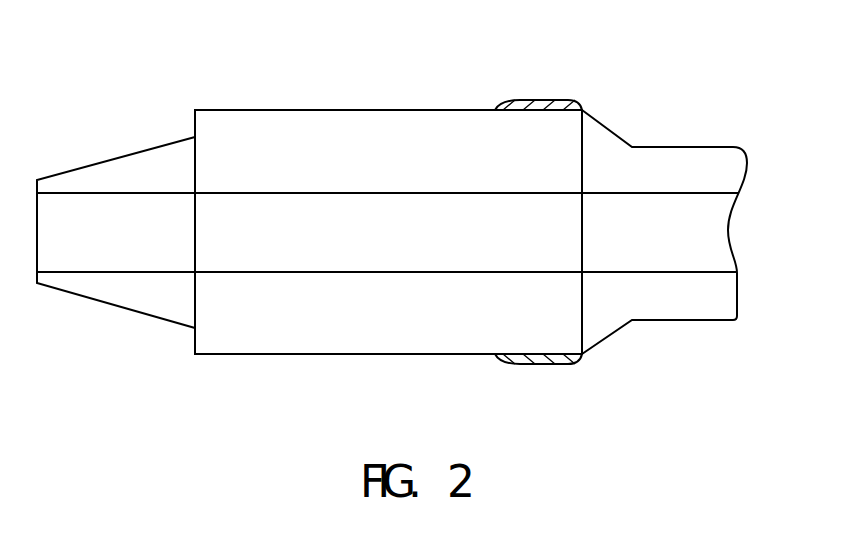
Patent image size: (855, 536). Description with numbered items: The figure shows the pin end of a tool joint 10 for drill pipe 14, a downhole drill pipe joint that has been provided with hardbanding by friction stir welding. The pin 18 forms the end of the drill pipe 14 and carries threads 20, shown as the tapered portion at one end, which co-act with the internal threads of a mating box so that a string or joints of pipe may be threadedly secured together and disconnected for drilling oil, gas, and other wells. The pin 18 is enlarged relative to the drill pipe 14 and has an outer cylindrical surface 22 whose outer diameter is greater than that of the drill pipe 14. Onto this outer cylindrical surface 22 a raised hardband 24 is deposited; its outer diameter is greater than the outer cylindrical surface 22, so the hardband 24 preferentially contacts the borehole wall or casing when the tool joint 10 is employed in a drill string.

The tool joint 10 is at (292, 357).
The drill pipe 14 is at (675, 147).
The pin 18 is at (405, 140).
The threads 20 is at (117, 157).
The outer cylindrical surfaces 22 is at (308, 110).
The hardbanding 24 is at (562, 100).